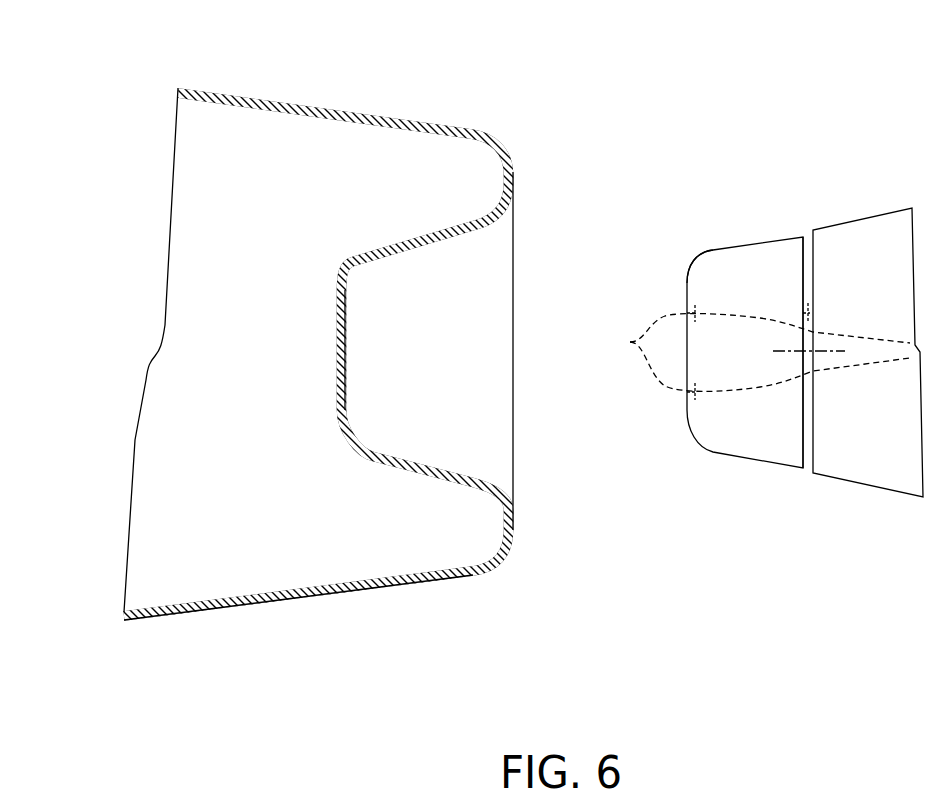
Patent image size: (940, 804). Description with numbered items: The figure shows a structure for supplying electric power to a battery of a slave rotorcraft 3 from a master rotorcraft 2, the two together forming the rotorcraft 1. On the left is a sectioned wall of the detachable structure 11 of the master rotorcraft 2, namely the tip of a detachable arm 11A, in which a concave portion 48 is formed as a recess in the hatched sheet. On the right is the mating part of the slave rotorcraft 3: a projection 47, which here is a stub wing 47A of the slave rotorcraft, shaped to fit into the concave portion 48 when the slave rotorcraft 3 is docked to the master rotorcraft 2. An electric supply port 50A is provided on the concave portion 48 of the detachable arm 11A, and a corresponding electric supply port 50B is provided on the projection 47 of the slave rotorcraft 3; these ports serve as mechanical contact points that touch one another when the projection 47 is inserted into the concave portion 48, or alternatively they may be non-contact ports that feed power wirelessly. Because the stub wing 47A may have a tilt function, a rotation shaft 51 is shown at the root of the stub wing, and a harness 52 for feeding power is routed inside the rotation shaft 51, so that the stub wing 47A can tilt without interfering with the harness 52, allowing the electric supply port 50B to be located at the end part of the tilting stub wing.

The rotorcraft 1 is at (651, 55).
The master rotorcraft 2 is at (513, 125).
The slave rotorcraft 3 is at (727, 197).
The detachable structure 11 is at (473, 580).
The detachable arm 11A is at (343, 590).
The projection 47 is at (712, 455).
The stub wing 47A is at (712, 275).
The concave portion 48 is at (488, 462).
The electric supply port 50A is at (337, 388).
The electric supply port 50B is at (630, 342).
The rotation shaft 51 is at (808, 300).
The harness 52 is at (840, 330).